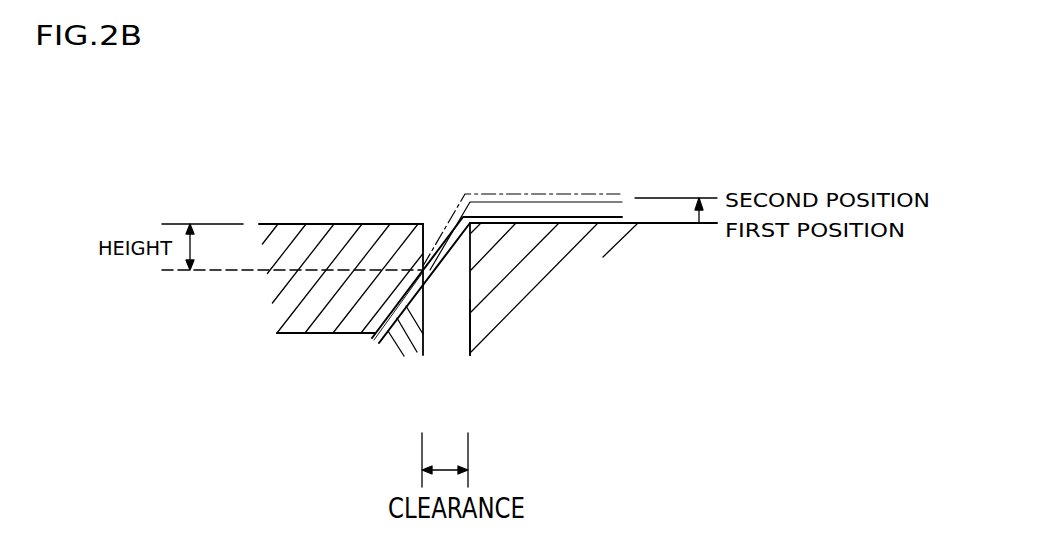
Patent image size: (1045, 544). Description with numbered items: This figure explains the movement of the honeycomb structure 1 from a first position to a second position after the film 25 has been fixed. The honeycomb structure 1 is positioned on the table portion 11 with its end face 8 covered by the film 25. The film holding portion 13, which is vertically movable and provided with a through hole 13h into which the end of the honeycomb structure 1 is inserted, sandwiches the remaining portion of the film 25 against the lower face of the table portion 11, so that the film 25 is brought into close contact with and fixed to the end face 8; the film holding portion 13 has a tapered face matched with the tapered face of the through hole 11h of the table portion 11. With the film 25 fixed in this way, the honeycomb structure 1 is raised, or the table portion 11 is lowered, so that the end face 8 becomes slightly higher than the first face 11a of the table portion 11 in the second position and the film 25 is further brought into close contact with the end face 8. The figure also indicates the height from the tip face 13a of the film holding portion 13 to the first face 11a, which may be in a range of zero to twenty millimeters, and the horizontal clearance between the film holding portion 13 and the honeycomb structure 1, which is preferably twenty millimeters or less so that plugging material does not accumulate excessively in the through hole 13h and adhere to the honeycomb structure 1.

The honeycomb structure 1 is at (515, 293).
The end face 8 is at (521, 222).
The table portion 11 is at (363, 240).
The first face 11a is at (298, 224).
The through hole 11h is at (428, 222).
The film holding portion 13 is at (396, 337).
The through hole 13h is at (424, 277).
The tip face 13a is at (469, 357).
The film 25 is at (588, 222).